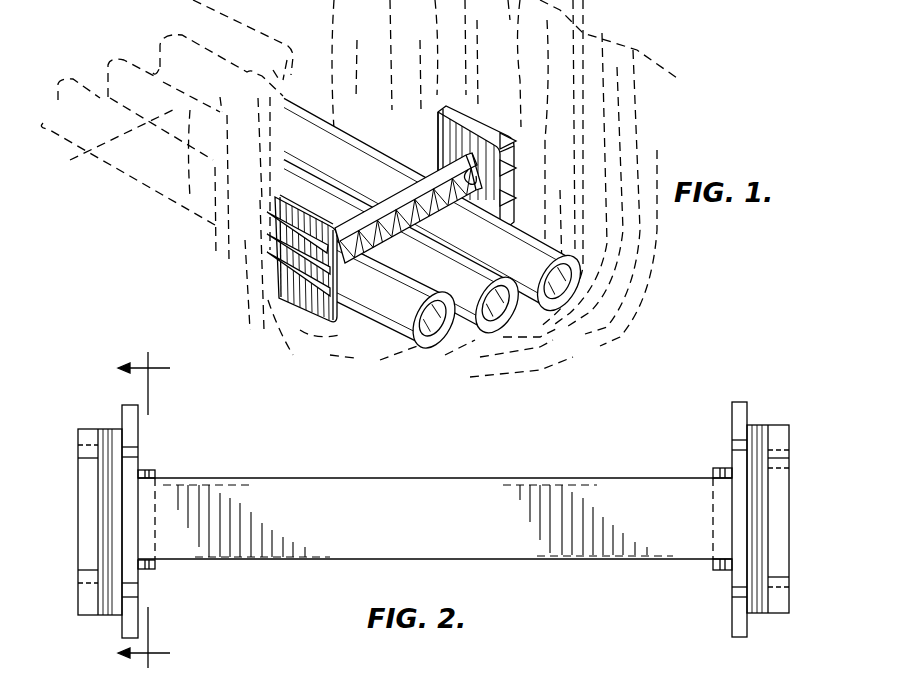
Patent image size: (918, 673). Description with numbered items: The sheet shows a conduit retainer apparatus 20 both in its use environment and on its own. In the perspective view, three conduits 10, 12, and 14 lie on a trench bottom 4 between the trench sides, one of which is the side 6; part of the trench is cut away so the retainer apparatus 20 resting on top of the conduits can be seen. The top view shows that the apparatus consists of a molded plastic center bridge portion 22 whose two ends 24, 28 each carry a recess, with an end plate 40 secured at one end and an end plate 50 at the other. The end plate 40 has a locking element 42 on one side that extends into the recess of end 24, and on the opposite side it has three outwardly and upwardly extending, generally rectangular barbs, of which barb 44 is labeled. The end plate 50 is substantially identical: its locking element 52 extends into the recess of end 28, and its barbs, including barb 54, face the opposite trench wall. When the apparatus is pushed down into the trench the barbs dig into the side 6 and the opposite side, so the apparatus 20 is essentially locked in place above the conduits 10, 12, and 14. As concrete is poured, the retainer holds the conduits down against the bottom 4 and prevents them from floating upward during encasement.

In FIG. 1, the trench bottom 4 is at (570, 358).
In FIG. 2, the trench bottom 4 is at (153, 510).
In FIG. 1, the side 6 is at (578, 48).
In FIG. 1, the conduit 10 is at (568, 259).
In FIG. 1, the conduit 12 is at (462, 357).
In FIG. 1, the conduit 14 is at (390, 336).
In FIG. 1, the conduit retainer apparatus 20 is at (500, 152).
In FIG. 2, the conduit retainer apparatus 20 is at (435, 489).
In FIG. 1, the center bridge portion 22 is at (420, 167).
In FIG. 2, the center bridge portion 22 is at (472, 476).
In FIG. 2, the end 24 is at (737, 550).
In FIG. 2, the end 28 is at (135, 491).
In FIG. 1, the end plate 40 is at (479, 183).
In FIG. 2, the end plate 40 is at (732, 413).
In FIG. 2, the locking element 42 is at (720, 468).
In FIG. 2, the barb 44 is at (776, 425).
In FIG. 1, the end plate 50 is at (273, 282).
In FIG. 2, the end plate 50 is at (138, 438).
In FIG. 2, the locking element 52 is at (151, 568).
In FIG. 2, the barb 54 is at (93, 428).